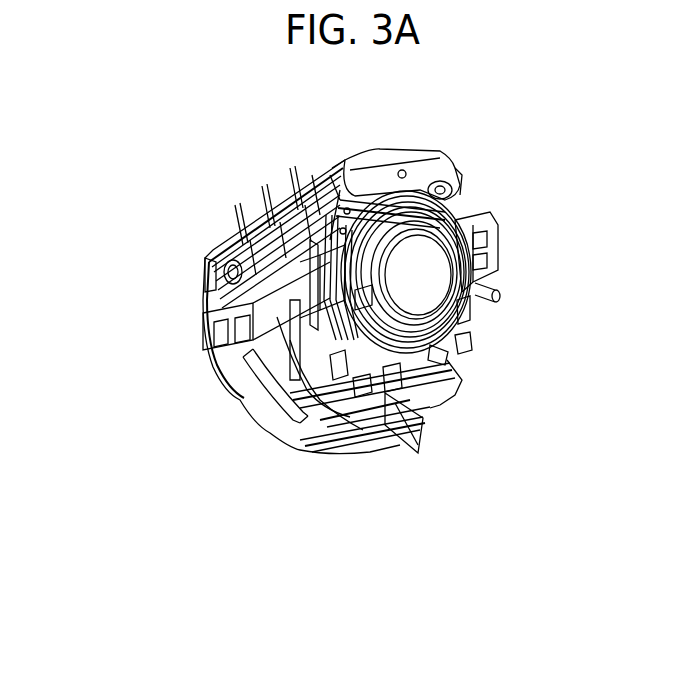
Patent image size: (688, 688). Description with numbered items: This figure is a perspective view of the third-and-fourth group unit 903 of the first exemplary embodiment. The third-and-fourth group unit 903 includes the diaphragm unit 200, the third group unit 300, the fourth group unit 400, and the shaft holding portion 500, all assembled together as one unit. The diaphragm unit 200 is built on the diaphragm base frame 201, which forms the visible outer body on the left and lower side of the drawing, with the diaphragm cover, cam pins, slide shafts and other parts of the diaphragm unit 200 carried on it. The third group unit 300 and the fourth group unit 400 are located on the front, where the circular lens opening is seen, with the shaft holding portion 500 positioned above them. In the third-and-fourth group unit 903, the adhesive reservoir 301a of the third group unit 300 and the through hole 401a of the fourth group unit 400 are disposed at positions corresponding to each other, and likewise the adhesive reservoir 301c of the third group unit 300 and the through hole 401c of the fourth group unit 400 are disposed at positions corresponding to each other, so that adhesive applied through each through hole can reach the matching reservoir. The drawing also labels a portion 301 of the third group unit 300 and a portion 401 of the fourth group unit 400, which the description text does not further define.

The diaphragm unit 200 is at (245, 400).
The diaphragm base frame 201 is at (277, 423).
The third group unit 300 is at (459, 378).
The protrusion of first ring 301 is at (409, 397).
The adhesive reservoir 301a is at (357, 277).
The adhesive reservoir 301c is at (438, 344).
The fourth group unit 400 is at (460, 248).
The rib of second ring 401 is at (470, 308).
The through hole 401a is at (355, 292).
The through hole 401c is at (447, 346).
The shaft holding portion 500 is at (383, 165).
The third-and-fourth group unit 903 is at (408, 523).